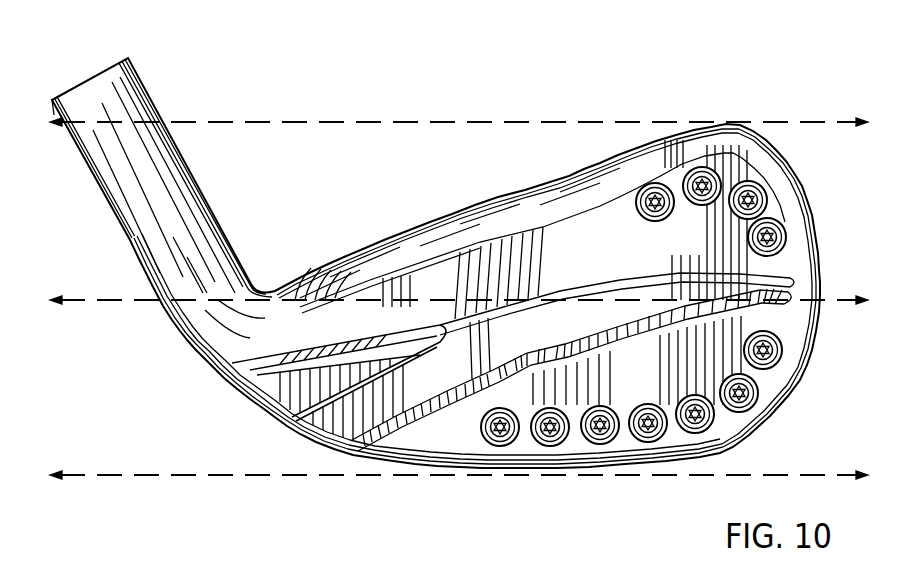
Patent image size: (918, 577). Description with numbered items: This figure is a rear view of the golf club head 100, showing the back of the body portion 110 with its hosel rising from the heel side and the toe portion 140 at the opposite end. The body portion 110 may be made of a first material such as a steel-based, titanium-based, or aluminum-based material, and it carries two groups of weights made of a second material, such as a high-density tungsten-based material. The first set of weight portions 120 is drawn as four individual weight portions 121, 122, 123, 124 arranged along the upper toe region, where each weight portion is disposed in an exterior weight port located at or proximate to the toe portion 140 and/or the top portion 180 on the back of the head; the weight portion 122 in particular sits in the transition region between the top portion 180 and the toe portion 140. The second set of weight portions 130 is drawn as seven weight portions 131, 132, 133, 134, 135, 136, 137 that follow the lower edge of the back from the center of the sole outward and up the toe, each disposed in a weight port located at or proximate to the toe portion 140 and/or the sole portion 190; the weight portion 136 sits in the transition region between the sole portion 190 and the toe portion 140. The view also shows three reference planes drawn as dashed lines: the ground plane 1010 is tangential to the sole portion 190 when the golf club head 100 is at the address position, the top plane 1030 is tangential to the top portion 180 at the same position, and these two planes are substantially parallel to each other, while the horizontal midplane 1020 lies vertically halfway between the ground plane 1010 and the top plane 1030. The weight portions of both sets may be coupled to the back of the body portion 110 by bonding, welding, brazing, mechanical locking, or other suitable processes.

The golf club head 100 is at (688, 45).
The body portion 110 is at (527, 208).
The first set of weight portions 120 is at (747, 152).
The weight portion 121 is at (636, 202).
The weight portion 122 is at (686, 176).
The weight portion 123 is at (767, 192).
The weight portion 124 is at (784, 226).
The second set of weight portions 130 is at (637, 483).
The weight portion 131 is at (485, 447).
The weight portion 132 is at (540, 447).
The weight portion 133 is at (582, 446).
The weight portion 134 is at (662, 436).
The weight portion 135 is at (711, 420).
The weight portion 136 is at (757, 398).
The weight portion 137 is at (783, 342).
The toe portion 140 is at (832, 278).
The top portion 180 is at (402, 208).
The sole portion 190 is at (372, 504).
The ground plane 1010 is at (124, 474).
The horizontal midplane 1020 is at (88, 299).
The top plane 1030 is at (227, 121).